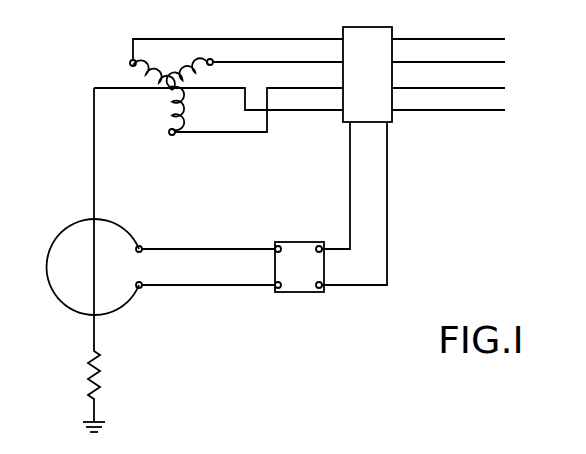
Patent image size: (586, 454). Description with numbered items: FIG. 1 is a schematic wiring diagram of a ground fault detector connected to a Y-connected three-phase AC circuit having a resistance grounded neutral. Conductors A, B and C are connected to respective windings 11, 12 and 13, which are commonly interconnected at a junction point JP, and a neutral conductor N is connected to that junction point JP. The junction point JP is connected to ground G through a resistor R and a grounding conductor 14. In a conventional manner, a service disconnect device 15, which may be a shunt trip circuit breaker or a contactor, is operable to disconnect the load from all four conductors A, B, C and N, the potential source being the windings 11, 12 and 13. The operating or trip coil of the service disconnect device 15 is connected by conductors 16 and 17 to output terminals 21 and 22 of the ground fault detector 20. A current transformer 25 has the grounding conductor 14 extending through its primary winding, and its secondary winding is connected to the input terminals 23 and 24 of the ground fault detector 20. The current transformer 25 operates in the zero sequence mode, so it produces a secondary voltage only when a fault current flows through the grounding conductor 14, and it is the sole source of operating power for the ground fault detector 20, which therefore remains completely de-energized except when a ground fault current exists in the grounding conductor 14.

The winding 11 is at (130, 73).
The winding 12 is at (201, 80).
The winding 13 is at (170, 112).
The junction point JP is at (167, 92).
The grounding conductor 14 is at (93, 141).
The service disconnect device 15 is at (372, 91).
The conductor 16 is at (350, 171).
The conductor 17 is at (388, 192).
The ground fault detector 20 is at (309, 283).
The output terminal 21 is at (329, 231).
The output terminal 22 is at (320, 294).
The input terminal 23 is at (275, 293).
The input terminal 24 is at (279, 240).
The current transformer 25 is at (70, 208).
The conductor A is at (458, 39).
The conductor B is at (458, 63).
The conductor C is at (458, 88).
The neutral conductor N is at (459, 111).
The resistor R is at (99, 377).
The ground G is at (104, 428).